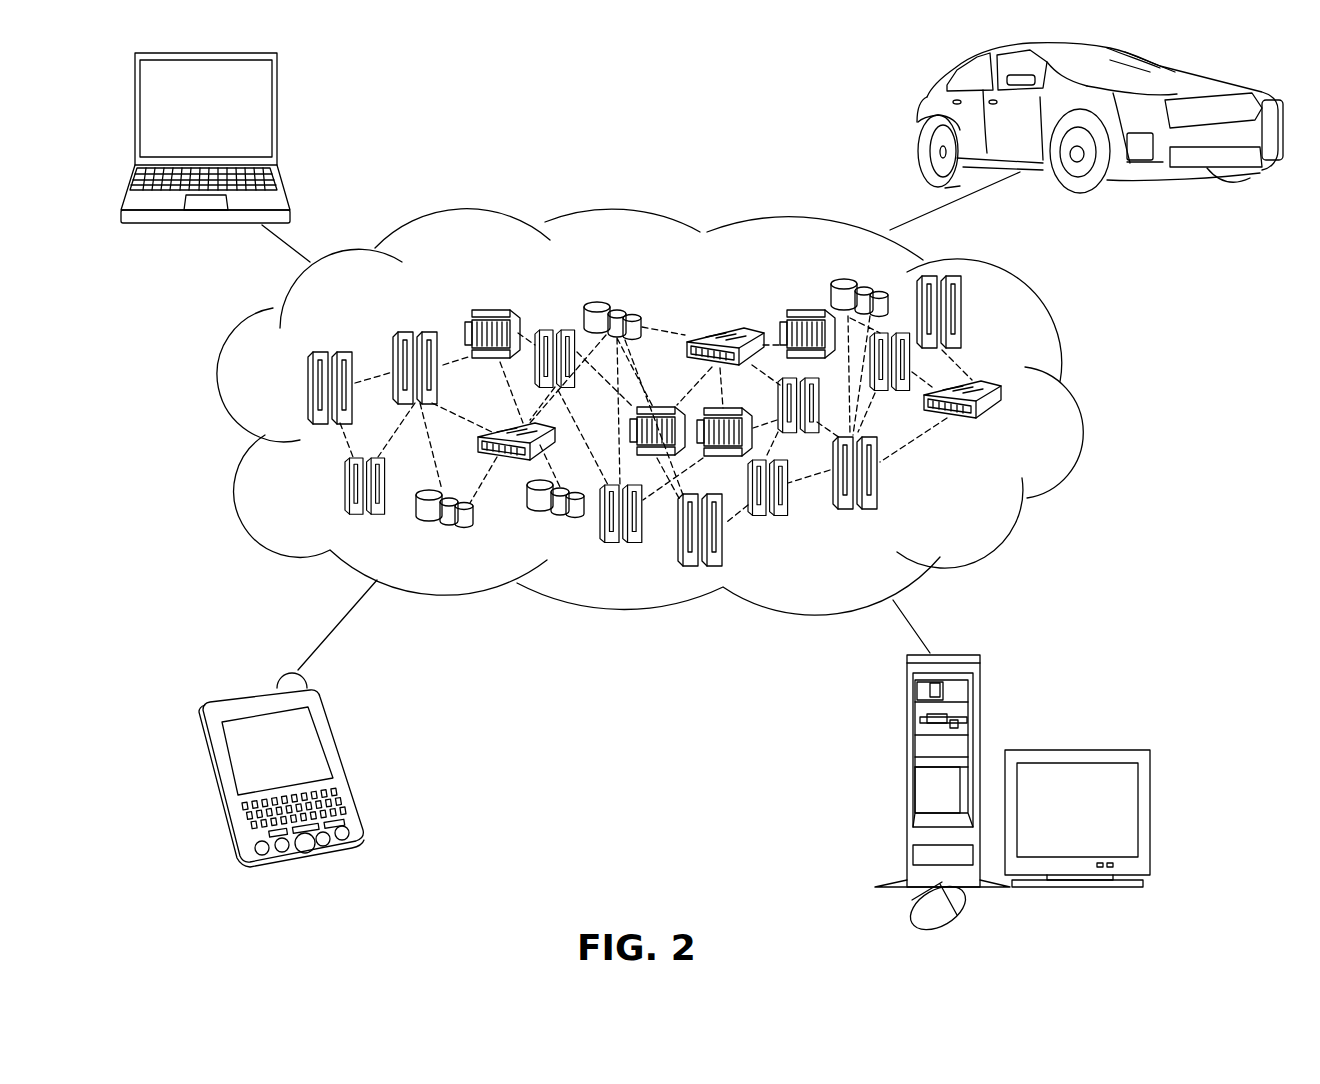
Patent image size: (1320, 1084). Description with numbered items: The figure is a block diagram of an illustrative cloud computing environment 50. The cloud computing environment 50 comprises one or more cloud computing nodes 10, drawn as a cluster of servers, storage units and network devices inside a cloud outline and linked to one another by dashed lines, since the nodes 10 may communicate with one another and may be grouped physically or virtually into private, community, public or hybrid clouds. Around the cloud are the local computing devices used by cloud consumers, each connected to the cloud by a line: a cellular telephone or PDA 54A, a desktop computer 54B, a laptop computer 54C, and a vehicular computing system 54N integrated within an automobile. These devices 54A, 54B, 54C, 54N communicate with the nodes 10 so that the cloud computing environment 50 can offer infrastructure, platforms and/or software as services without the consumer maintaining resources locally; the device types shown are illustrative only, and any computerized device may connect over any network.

The cloud computing node 10 is at (981, 502).
The cloud computing environment 50 is at (1077, 398).
The cellular telephone or PDA 54A is at (333, 731).
The desktop computer 54B is at (907, 717).
The laptop computer 54C is at (277, 92).
The vehicular computing system 54N is at (927, 110).